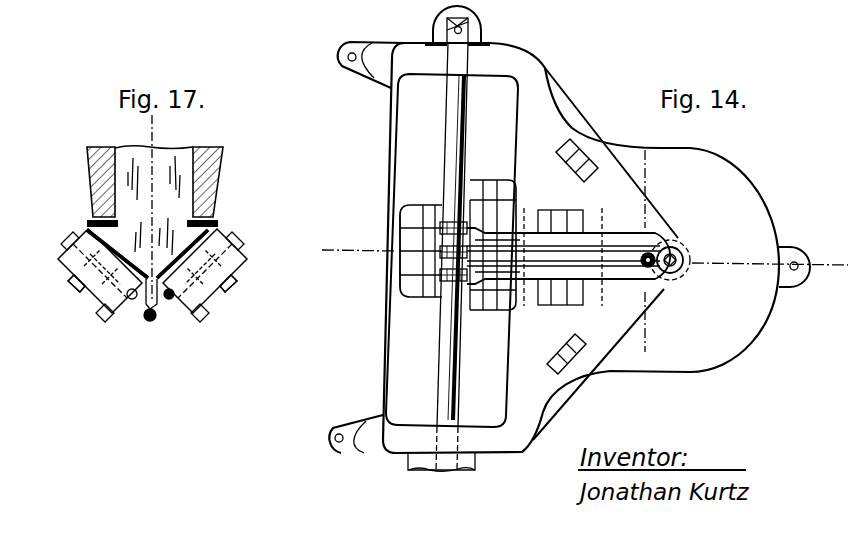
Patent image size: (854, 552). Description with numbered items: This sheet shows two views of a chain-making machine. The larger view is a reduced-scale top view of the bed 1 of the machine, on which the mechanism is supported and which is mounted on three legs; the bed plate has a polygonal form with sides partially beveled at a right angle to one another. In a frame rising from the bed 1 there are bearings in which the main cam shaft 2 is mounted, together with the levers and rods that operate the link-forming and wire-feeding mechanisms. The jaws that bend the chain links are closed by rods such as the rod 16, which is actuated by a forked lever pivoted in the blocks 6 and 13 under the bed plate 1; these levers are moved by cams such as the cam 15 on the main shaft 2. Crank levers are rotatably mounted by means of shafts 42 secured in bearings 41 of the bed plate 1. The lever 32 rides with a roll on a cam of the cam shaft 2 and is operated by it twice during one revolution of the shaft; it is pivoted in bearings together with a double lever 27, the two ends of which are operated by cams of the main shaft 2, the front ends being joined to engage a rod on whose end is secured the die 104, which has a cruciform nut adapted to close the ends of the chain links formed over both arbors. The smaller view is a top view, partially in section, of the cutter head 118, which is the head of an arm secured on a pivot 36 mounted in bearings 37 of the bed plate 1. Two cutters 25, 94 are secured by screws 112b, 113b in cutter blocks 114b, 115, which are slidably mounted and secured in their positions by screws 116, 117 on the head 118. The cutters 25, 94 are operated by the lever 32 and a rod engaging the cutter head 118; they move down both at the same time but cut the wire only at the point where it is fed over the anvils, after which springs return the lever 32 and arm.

In FIG. 14, the bed 1 is at (578, 118).
In FIG. 14, the main cam shaft 2 is at (458, 100).
In FIG. 14, the block 6 is at (557, 152).
In FIG. 14, the block 13 is at (551, 372).
In FIG. 14, the cam 15 is at (659, 251).
In FIG. 14, the rod 16 is at (585, 273).
In FIG. 14, the double lever 27 is at (640, 243).
In FIG. 14, the lever 32 is at (628, 268).
In FIG. 14, the pivot 36 is at (423, 210).
In FIG. 14, the bearings 37 is at (403, 292).
In FIG. 14, the bearings 41 is at (493, 233).
In FIG. 14, the shafts 42 is at (500, 307).
In FIG. 17, the cutter 25 is at (133, 300).
In FIG. 17, the cutter 94 is at (167, 300).
In FIG. 17, the die 104 is at (153, 322).
In FIG. 17, the screw 112b is at (107, 322).
In FIG. 17, the screw 113b is at (200, 320).
In FIG. 17, the cutter block 114b is at (70, 238).
In FIG. 17, the cutter block 115 is at (240, 262).
In FIG. 17, the screw 116 is at (76, 292).
In FIG. 17, the screw 117 is at (230, 294).
In FIG. 17, the cutter head 118 is at (168, 205).